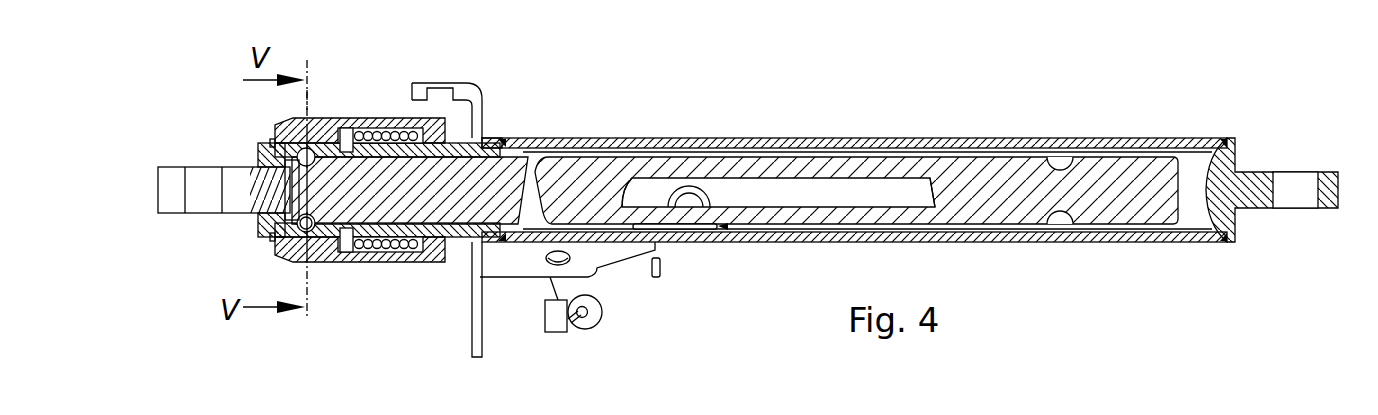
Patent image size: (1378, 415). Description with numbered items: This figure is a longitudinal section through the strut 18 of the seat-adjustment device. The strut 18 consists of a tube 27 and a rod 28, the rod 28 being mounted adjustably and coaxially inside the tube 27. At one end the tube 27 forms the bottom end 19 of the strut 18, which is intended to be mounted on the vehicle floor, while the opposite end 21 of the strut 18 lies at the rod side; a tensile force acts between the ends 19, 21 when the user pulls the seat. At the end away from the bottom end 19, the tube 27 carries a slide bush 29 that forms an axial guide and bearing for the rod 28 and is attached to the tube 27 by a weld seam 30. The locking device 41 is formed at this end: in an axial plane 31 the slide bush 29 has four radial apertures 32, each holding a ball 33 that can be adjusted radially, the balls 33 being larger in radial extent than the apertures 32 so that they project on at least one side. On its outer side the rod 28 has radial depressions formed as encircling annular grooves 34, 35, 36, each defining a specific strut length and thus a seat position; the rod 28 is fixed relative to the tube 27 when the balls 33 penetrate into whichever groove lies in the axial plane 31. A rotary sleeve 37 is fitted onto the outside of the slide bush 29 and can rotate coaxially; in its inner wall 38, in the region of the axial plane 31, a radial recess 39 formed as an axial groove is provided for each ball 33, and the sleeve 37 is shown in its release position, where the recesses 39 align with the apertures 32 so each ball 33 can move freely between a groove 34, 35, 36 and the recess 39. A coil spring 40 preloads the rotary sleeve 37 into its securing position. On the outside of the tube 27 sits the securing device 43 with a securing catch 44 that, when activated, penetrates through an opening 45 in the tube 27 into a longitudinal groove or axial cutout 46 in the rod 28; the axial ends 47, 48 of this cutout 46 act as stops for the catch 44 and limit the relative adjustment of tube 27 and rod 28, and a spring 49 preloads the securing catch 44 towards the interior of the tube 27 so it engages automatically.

The strut 18 is at (814, 128).
The bottom end 19 is at (1233, 147).
The end of the strut 21 is at (178, 172).
The tube 27 is at (1060, 145).
The rod 28 is at (958, 168).
The slide bush 29 is at (483, 138).
The weld seam 30 is at (507, 138).
The axial plane 31 is at (311, 72).
The radial apertures 32 is at (268, 152).
The balls 33 is at (272, 139).
The radial depression (annular groove) 34 is at (310, 165).
The radial depression (annular groove) 35 is at (537, 208).
The radial depression (annular groove) 36 is at (1058, 214).
The rotary sleeve 37 is at (362, 120).
The inner wall 38 is at (318, 235).
The radial recess 39 is at (322, 128).
The coil spring 40 is at (407, 262).
The locking device 41 is at (336, 315).
The securing device 43 is at (541, 343).
The securing catch 44 is at (681, 254).
The opening 45 is at (736, 242).
The longitudinal groove (axial cutout) 46 is at (736, 180).
The axial end 47 is at (632, 188).
The axial end 48 is at (933, 193).
The spring 49 is at (658, 277).